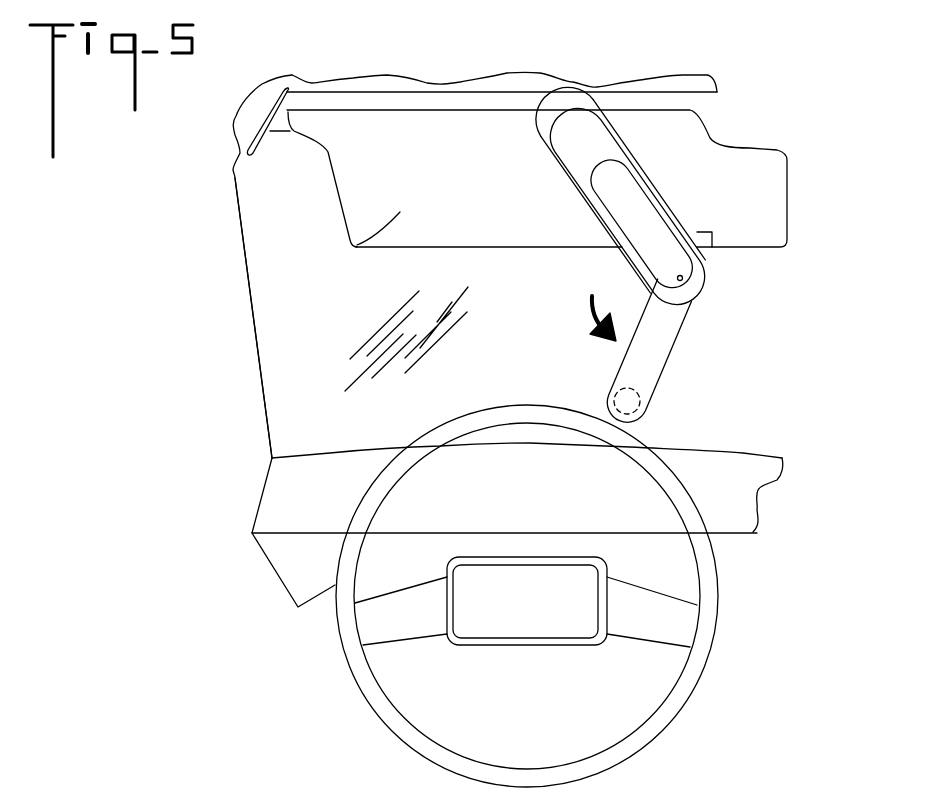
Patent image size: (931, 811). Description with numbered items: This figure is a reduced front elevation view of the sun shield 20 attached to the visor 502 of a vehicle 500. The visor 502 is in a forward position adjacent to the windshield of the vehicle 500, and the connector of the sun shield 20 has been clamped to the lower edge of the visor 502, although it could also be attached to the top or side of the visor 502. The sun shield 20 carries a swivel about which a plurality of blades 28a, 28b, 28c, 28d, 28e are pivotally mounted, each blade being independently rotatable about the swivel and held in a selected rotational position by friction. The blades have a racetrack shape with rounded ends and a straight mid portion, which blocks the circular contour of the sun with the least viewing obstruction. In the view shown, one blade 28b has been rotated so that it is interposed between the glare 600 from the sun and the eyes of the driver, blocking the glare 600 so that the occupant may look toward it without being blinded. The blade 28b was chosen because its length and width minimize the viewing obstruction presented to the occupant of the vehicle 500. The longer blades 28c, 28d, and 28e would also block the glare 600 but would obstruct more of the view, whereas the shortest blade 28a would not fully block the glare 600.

The sun shield 20 is at (604, 226).
The blade 28a is at (648, 227).
The blade 28b is at (652, 350).
The blade 28c is at (605, 145).
The blade 28d is at (557, 135).
The blade 28e is at (565, 97).
The vehicle 500 is at (752, 432).
The visor 502 is at (357, 245).
The glare 600 is at (625, 402).